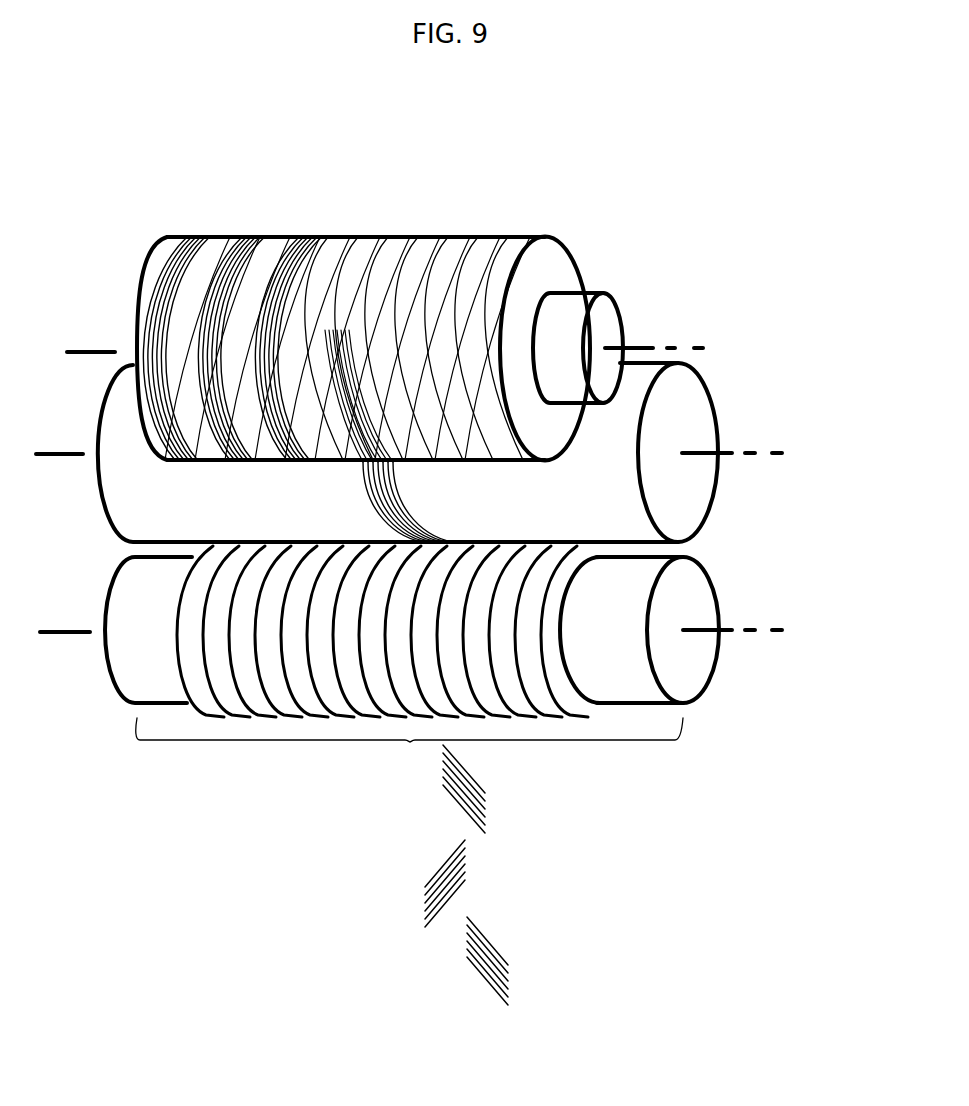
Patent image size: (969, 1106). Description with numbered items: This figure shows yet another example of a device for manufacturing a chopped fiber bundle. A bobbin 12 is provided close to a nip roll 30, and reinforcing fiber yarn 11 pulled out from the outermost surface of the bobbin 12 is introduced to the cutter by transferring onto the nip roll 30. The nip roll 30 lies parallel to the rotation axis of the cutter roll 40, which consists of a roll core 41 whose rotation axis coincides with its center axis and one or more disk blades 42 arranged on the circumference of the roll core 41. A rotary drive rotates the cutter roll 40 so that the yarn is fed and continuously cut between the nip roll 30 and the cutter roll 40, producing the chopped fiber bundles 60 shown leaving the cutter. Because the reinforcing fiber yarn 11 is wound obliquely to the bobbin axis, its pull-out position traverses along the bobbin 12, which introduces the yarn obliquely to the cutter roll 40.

The reinforcing fiber yarn 11 is at (325, 237).
The bobbin 12 is at (557, 275).
The nip roll 30 is at (146, 462).
The cutter roll 40 is at (410, 742).
The roll core 41 is at (683, 602).
The disk blades 42 is at (273, 718).
The fibers 60 is at (477, 798).